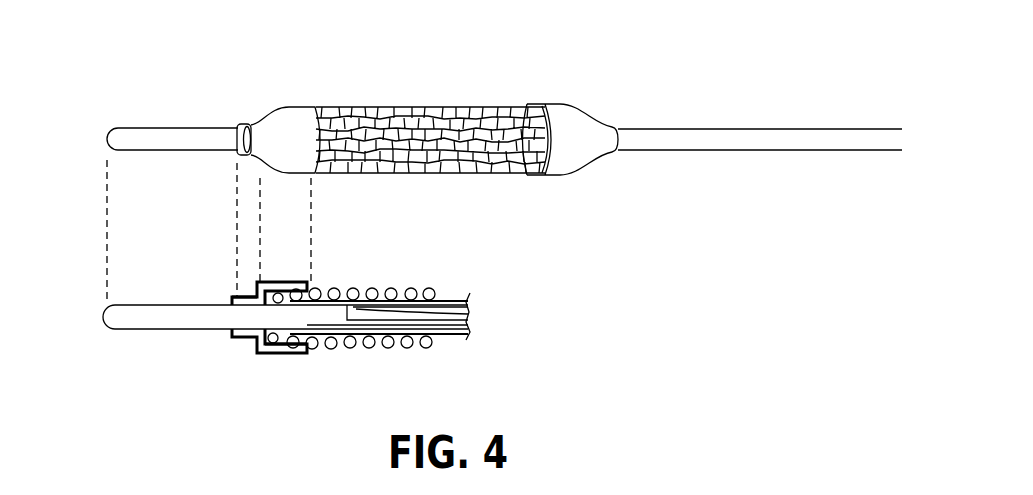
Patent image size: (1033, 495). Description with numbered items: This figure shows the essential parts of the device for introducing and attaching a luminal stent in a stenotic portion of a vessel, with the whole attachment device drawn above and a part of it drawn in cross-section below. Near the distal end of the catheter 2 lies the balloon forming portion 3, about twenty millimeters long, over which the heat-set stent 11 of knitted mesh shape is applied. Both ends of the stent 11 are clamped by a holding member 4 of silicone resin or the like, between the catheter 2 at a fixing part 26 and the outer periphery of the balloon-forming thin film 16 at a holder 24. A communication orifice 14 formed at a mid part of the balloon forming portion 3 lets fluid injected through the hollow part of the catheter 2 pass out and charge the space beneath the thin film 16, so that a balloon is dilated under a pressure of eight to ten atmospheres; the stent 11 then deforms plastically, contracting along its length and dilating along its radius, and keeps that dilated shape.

The catheter 2 is at (750, 128).
The balloon forming portion 3 is at (484, 164).
The holding member 4 is at (558, 102).
The stent 11 is at (406, 182).
The communication orifice 14 is at (468, 312).
The balloon-forming thin film 16 is at (455, 338).
The holder 24 is at (286, 341).
The fixing part 26 is at (247, 293).